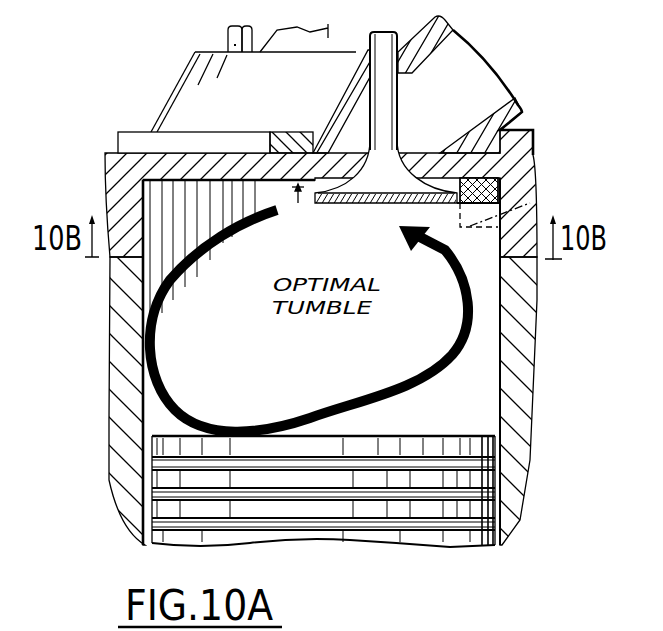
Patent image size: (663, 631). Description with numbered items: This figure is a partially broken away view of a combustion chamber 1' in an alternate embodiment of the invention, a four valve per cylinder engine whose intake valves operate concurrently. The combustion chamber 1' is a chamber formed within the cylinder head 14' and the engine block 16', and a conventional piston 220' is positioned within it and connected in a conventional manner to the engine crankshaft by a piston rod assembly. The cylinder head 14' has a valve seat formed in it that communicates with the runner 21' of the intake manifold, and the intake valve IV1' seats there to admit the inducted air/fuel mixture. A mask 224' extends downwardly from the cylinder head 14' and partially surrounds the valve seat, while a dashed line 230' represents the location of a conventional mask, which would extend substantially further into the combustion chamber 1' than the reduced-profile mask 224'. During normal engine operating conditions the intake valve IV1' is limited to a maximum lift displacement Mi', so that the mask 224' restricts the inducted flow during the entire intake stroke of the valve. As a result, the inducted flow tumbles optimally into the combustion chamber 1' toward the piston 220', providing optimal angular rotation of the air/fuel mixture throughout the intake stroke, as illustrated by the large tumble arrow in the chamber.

The cylinder head 14' is at (297, 136).
The engine block 16' is at (297, 361).
The combustion chamber 1' is at (369, 267).
The runner of intake manifold 21' is at (513, 92).
The mask 224' is at (535, 180).
The dashed line 230' is at (541, 204).
The piston 220' is at (323, 474).
The intake valve IV1' is at (390, 117).
The maximum lift displacement Mi' is at (308, 208).